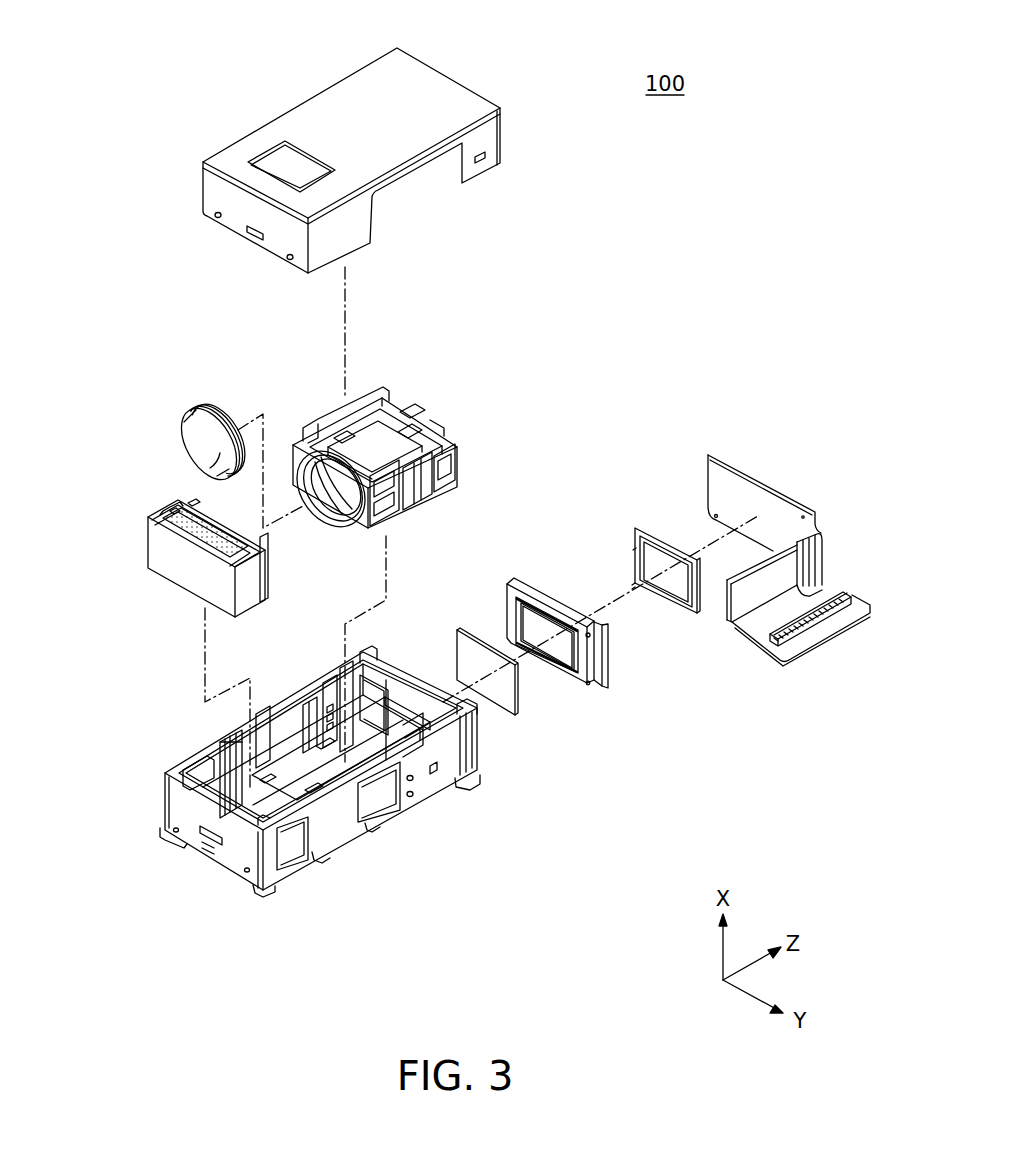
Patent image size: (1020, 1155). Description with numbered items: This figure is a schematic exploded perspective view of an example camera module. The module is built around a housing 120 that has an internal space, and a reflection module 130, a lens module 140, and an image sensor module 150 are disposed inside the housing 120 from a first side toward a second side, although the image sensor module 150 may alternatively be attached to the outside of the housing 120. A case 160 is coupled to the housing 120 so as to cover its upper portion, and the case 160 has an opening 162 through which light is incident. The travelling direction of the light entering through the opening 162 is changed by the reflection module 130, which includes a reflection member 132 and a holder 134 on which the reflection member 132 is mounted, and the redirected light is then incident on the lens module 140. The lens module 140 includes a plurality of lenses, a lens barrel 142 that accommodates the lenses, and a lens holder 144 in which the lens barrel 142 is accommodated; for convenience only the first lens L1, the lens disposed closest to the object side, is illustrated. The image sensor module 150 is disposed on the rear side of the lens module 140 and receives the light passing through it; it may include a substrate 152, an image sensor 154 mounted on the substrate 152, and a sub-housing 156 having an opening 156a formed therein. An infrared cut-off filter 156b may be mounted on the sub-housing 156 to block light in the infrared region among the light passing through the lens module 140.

The housing 120 is at (175, 812).
The reflection module 130 is at (62, 447).
The reflection member 132 is at (187, 528).
The holder 134 is at (168, 557).
The lens module 140 is at (157, 339).
The first lens L1 is at (195, 432).
The lens barrel 142 is at (325, 453).
The lens holder 144 is at (335, 423).
The image sensor module 150 is at (490, 499).
The substrate 152 is at (703, 504).
The image sensor 154 is at (626, 522).
The sub-housing 156 is at (503, 594).
The opening 156a is at (563, 645).
The infrared cut-off filter 156b is at (463, 658).
The case 160 is at (342, 108).
The opening 162 is at (277, 160).